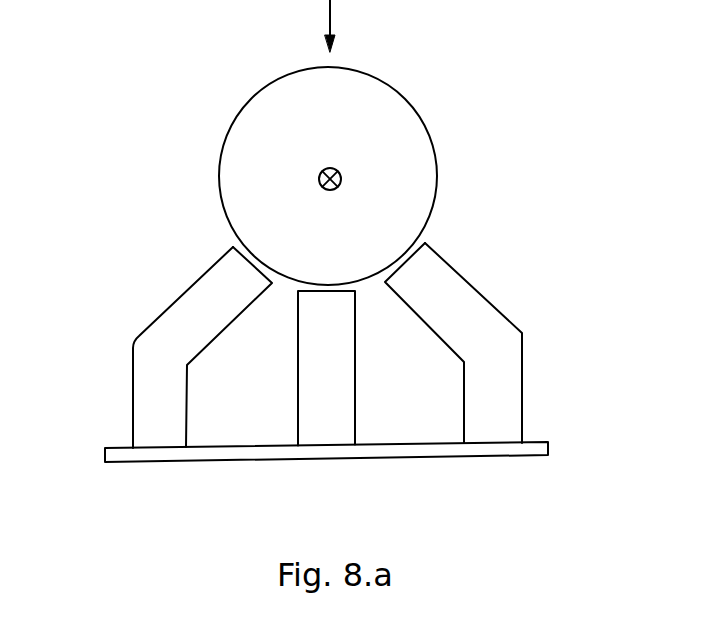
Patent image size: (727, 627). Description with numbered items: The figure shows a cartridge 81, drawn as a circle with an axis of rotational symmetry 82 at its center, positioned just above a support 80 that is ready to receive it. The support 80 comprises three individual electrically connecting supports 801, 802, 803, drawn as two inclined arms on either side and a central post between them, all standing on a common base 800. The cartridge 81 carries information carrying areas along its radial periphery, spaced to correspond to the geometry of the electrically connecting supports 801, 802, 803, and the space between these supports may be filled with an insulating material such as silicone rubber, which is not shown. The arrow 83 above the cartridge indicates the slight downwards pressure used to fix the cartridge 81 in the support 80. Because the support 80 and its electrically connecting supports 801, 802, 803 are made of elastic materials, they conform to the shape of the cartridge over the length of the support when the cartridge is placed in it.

The support 80 is at (326, 333).
The cartridge 81 is at (403, 177).
The axis of rotational symmetry 82 is at (339, 171).
The arrow 83 is at (328, 15).
The base plate 800 is at (408, 450).
The electrically connecting support 801 is at (493, 323).
The electrically connecting support 802 is at (158, 332).
The electrically connecting support 803 is at (310, 365).